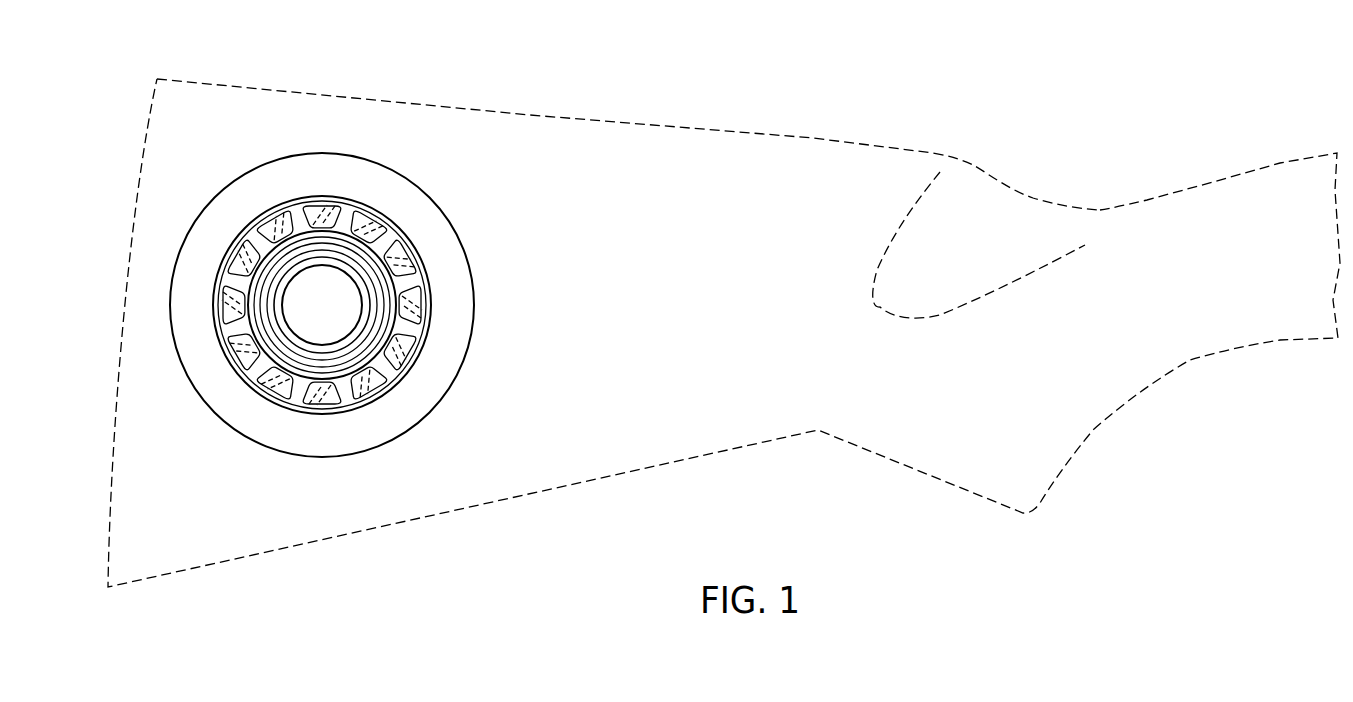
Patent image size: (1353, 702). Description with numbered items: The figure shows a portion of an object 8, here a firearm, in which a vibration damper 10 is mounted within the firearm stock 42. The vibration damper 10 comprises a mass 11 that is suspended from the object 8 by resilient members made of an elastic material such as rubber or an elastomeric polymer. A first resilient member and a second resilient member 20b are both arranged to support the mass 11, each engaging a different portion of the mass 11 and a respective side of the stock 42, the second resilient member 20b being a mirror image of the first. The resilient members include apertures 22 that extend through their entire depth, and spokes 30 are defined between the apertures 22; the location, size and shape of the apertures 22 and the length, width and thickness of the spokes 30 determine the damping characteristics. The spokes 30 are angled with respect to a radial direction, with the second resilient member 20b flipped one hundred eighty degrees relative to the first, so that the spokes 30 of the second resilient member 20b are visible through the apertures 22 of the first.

The object 8 is at (724, 293).
The vibration damper 10 is at (257, 148).
The mass 11 is at (308, 322).
The second resilient member 20b is at (370, 383).
The apertures 22 is at (420, 302).
The spokes 30 is at (398, 250).
The firearm stock 42 is at (552, 130).